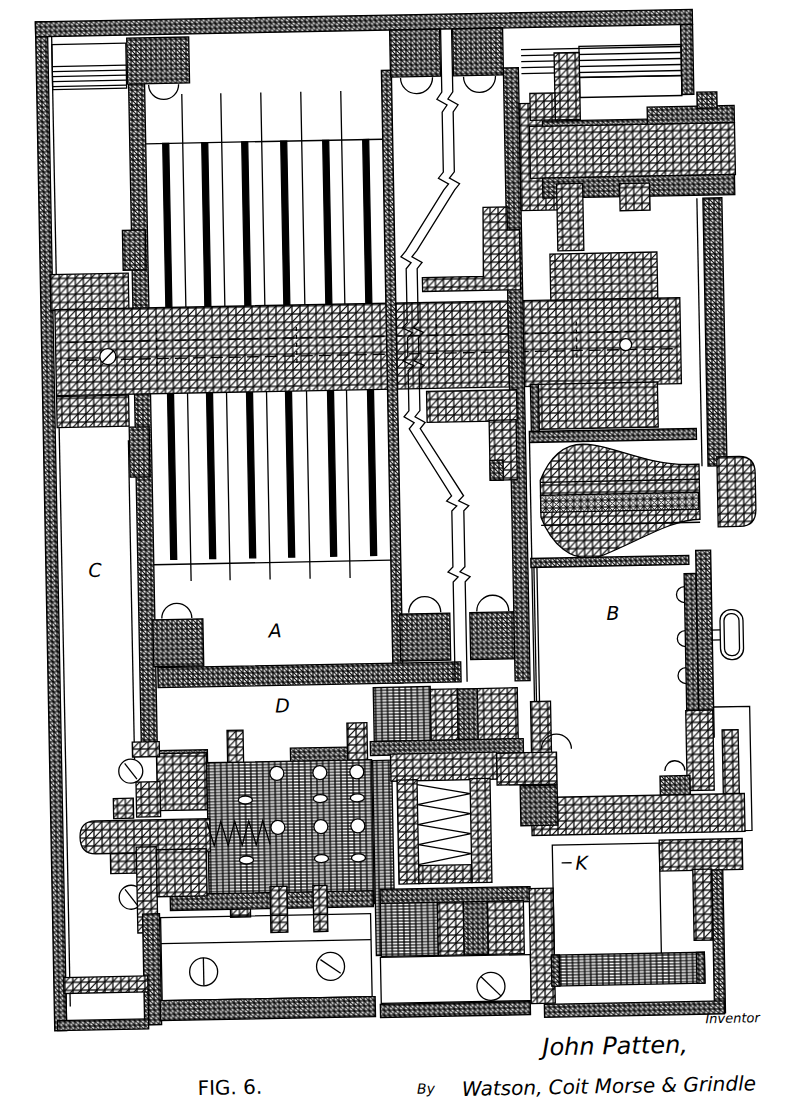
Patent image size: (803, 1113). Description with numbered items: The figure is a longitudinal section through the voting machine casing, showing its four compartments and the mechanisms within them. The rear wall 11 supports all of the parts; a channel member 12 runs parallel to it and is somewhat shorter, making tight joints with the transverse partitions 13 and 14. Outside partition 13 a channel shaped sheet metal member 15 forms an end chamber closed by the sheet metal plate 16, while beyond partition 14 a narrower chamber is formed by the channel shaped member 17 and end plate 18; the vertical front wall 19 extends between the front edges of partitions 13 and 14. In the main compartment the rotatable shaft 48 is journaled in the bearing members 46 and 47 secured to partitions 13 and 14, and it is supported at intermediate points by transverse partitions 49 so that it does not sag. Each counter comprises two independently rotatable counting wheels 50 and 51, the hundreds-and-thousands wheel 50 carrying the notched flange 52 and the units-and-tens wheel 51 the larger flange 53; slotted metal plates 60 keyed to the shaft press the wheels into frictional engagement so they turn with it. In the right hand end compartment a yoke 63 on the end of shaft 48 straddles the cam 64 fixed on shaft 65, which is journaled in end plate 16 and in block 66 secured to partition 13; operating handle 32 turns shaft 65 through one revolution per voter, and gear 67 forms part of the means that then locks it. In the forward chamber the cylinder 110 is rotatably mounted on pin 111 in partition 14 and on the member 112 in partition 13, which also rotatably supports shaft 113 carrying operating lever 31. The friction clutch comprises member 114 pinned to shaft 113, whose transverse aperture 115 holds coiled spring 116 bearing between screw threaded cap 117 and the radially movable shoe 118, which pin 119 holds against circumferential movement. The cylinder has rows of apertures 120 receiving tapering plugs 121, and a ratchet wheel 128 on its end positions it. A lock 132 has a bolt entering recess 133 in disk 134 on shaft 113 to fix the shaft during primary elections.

The rear wall 11 is at (324, 31).
The channel member 12 is at (305, 663).
The transverse partition 13 is at (537, 591).
The transverse partition 14 is at (138, 608).
The channel shaped sheet metal member 15 is at (634, 982).
The sheet metal plate 16 is at (712, 592).
The channel shaped sheet metal member 17 is at (100, 1022).
The end plate 18 is at (49, 763).
The front wall 19 is at (326, 1008).
The operating lever 31 is at (733, 876).
The operating handle 32 is at (727, 318).
The bearing member 46 is at (448, 278).
The bearing member 47 is at (128, 237).
The rotatable shaft 48 is at (462, 415).
The transverse partitions 49 is at (399, 137).
The counting wheel 50 is at (195, 150).
The counting wheel 51 is at (350, 135).
The flange 52 is at (238, 140).
The flange 53 is at (333, 125).
The metal plates 60 is at (364, 556).
The yoke 63 is at (627, 265).
The cam 64 is at (624, 112).
The shaft 65 is at (638, 192).
The block 66 is at (529, 197).
The gear 67 is at (595, 70).
The cylinder 110 is at (314, 750).
The pin 111 is at (103, 850).
The member 112 is at (550, 771).
The shaft 113 is at (594, 800).
The clutch member 114 is at (402, 956).
The transverse aperture 115 is at (363, 858).
The coiled spring 116 is at (547, 788).
The screw threaded cap 117 is at (444, 958).
The shoe 118 is at (350, 736).
The pin 119 is at (566, 748).
The apertures 120 is at (235, 915).
The tapering plugs 121 is at (278, 932).
The ratchet wheel 128 is at (537, 689).
The lock 132 is at (683, 687).
The recess 133 is at (688, 725).
The disk 134 is at (688, 740).